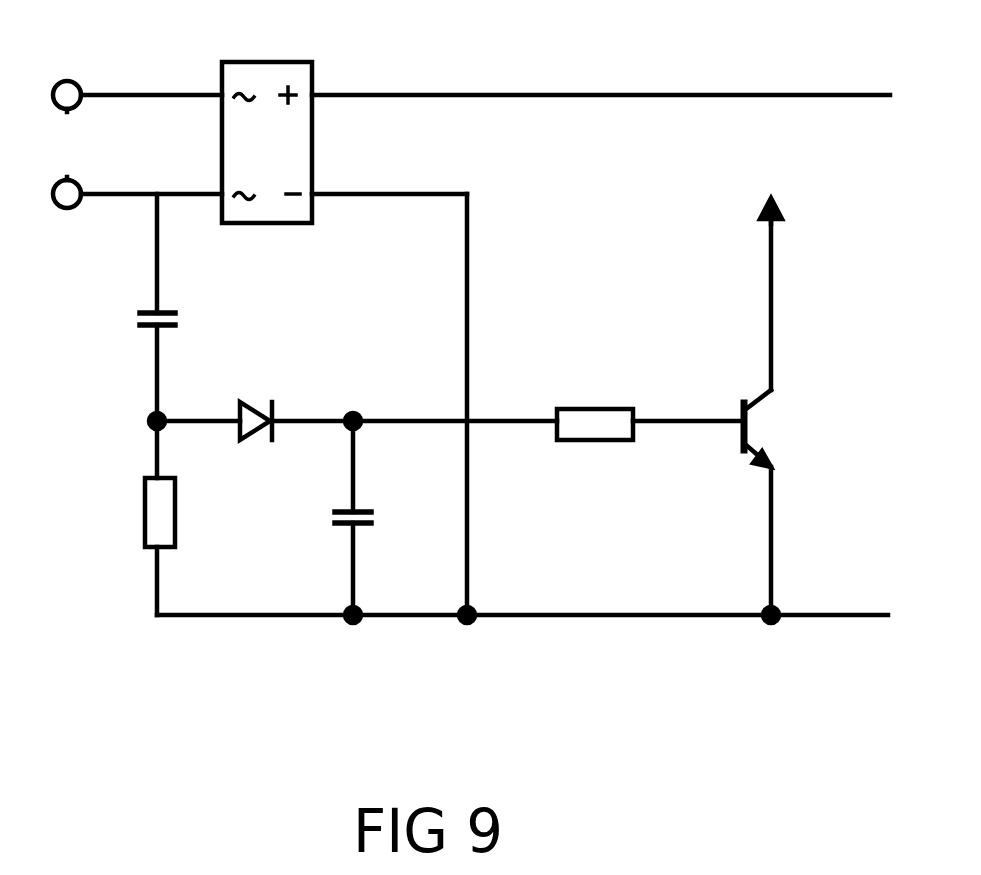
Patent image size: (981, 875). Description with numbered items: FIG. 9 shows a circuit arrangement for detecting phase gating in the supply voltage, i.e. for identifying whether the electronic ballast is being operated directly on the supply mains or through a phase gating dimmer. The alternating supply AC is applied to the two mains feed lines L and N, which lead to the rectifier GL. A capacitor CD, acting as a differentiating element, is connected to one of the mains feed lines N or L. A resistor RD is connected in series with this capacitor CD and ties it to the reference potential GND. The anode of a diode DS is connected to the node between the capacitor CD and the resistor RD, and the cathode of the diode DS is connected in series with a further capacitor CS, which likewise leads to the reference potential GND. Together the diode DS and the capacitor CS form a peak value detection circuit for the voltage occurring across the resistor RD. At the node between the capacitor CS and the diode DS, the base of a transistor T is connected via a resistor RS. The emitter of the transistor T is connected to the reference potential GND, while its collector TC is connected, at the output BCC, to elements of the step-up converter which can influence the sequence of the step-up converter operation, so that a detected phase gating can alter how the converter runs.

The mains feed line L is at (67, 68).
The mains feed line N is at (67, 222).
The supply mains AC is at (53, 144).
The rectifier GL is at (267, 116).
The capacitor CD is at (124, 318).
The resistor RD is at (124, 512).
The diode DS is at (258, 392).
The further capacitor CS is at (318, 518).
The reference potential GND is at (477, 439).
The resistor RS is at (595, 399).
The transistor T is at (777, 502).
The collector TC is at (738, 304).
The step-up converter connection BCC is at (770, 186).